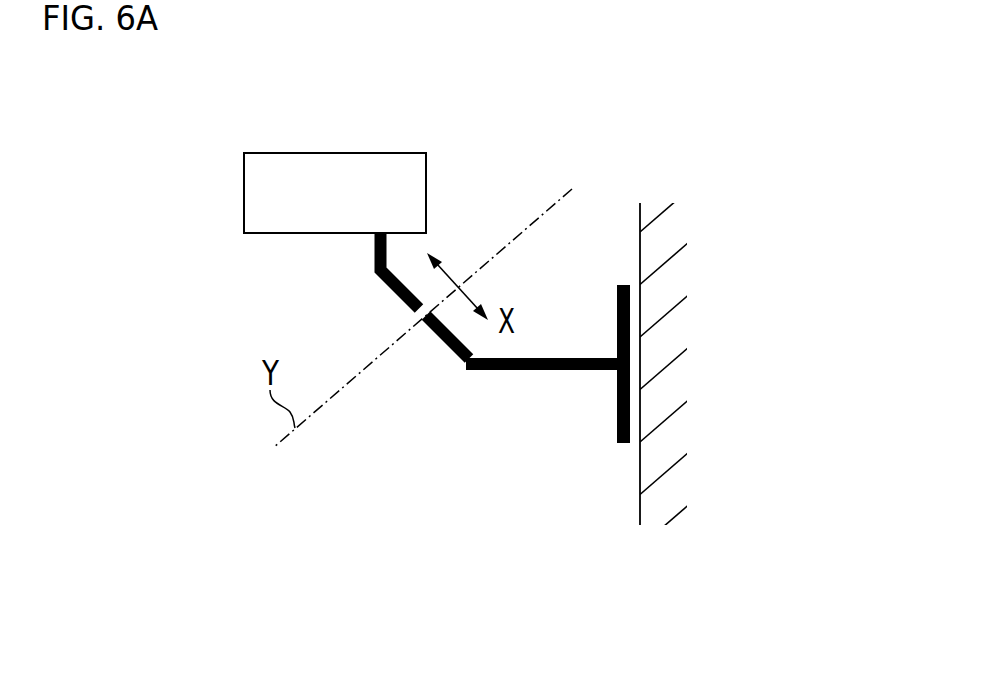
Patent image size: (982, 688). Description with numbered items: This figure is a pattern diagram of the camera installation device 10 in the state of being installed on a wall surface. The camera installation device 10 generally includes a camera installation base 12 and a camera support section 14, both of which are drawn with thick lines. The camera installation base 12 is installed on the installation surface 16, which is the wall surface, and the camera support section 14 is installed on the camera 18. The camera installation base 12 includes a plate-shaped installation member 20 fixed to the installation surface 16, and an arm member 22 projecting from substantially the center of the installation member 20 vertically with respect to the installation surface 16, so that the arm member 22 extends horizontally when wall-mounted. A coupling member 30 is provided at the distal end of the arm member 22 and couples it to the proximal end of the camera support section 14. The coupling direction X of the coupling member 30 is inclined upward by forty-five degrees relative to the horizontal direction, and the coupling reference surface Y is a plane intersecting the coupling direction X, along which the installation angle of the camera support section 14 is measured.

The camera installation device 10 is at (544, 122).
The camera installation base 12 is at (505, 498).
The camera support section 14 is at (374, 272).
The installation surface 16 is at (640, 497).
The camera 18 is at (335, 160).
The installation member 20 is at (617, 408).
The arm member 22 is at (505, 372).
The coupling member 30 is at (414, 386).